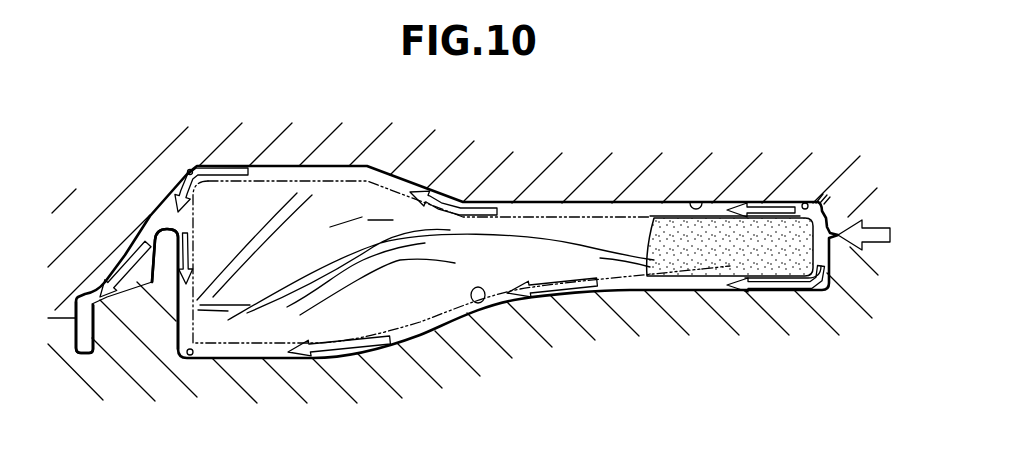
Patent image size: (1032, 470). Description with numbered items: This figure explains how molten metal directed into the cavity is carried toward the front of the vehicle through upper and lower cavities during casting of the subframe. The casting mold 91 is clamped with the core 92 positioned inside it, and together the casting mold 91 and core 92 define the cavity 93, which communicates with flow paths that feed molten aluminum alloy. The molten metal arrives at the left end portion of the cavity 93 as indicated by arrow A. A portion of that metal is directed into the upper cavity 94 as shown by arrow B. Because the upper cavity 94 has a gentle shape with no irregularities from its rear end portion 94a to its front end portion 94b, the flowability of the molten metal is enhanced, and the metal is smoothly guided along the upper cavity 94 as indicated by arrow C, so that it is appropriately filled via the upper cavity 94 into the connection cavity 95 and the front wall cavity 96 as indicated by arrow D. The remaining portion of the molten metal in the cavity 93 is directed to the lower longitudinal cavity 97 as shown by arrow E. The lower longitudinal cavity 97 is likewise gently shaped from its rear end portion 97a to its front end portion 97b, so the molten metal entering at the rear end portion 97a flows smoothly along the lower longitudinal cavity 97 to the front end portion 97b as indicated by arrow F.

The casting mold 91 is at (585, 160).
The core 92 is at (717, 262).
The cavity 93 is at (823, 190).
The upper cavity 94 is at (692, 202).
The rear end portion 94a is at (802, 203).
The front end portion 94b is at (188, 172).
The connection cavity 95 is at (82, 297).
The front wall cavity 96 is at (177, 316).
The lower longitudinal cavity 97 is at (477, 303).
The rear end portion 97a is at (822, 297).
The front end portion 97b is at (195, 353).
The arrow A is at (878, 230).
The arrow B is at (782, 207).
The arrow C is at (223, 168).
The arrow D is at (130, 257).
The arrow E is at (777, 289).
The arrow F is at (565, 288).